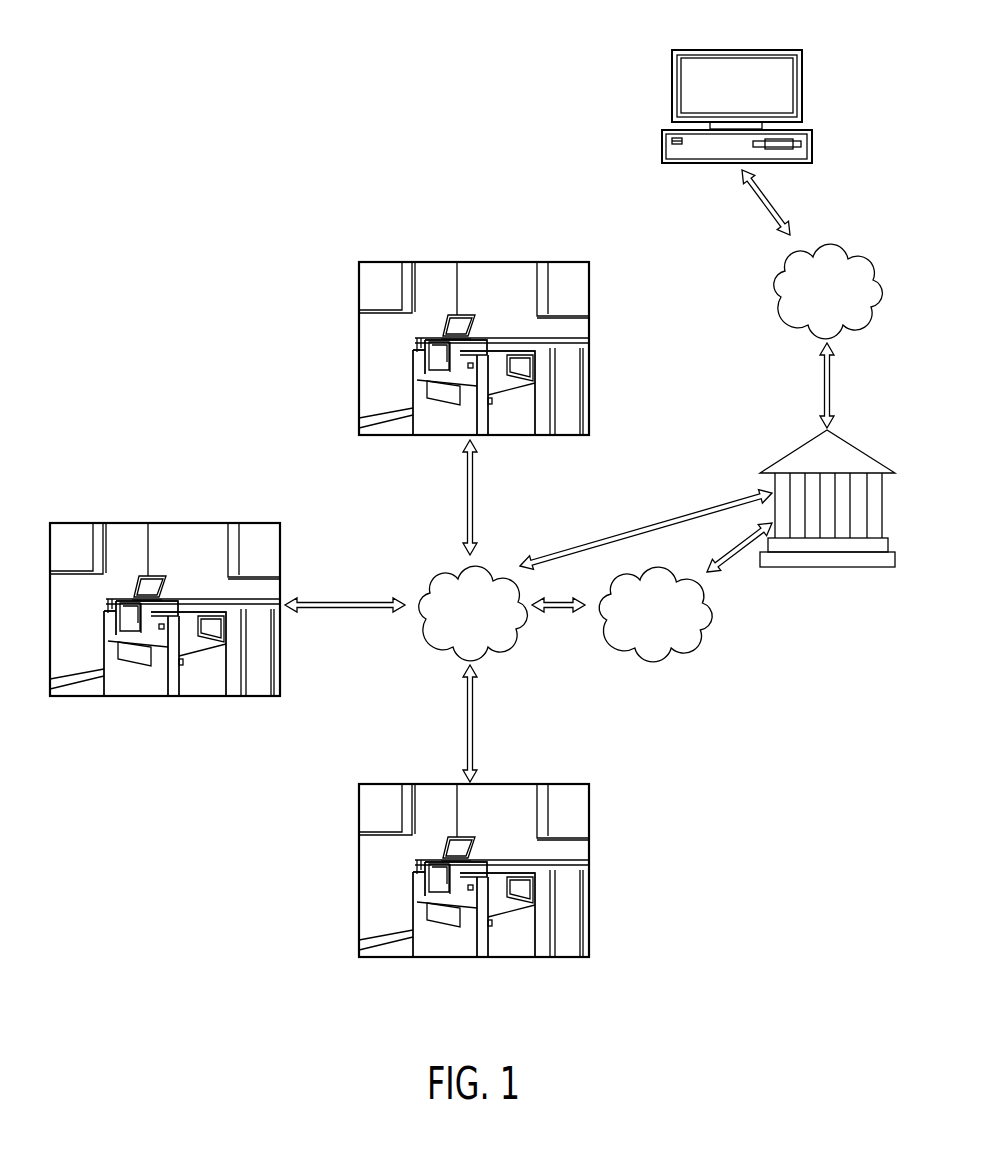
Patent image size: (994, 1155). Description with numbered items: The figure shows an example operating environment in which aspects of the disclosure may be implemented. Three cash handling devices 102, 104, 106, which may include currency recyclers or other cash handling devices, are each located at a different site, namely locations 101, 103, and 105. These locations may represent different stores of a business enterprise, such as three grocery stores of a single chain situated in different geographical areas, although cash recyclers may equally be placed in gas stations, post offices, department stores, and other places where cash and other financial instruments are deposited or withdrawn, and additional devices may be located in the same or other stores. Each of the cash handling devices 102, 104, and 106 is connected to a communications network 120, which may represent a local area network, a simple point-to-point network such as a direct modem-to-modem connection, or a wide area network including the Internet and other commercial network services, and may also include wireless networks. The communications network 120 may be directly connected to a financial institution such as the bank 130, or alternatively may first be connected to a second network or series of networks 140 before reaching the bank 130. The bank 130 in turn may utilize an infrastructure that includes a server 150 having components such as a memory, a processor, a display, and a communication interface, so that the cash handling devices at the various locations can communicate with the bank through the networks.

The location 101 is at (474, 347).
The cash handling device 102 is at (437, 425).
The location 103 is at (165, 607).
The cash handling device 104 is at (122, 682).
The location 105 is at (443, 898).
The cash handling device 106 is at (438, 945).
The communications network 120 is at (505, 646).
The bank 130 is at (800, 448).
The series of networks 140 is at (762, 280).
The server 150 is at (768, 50).